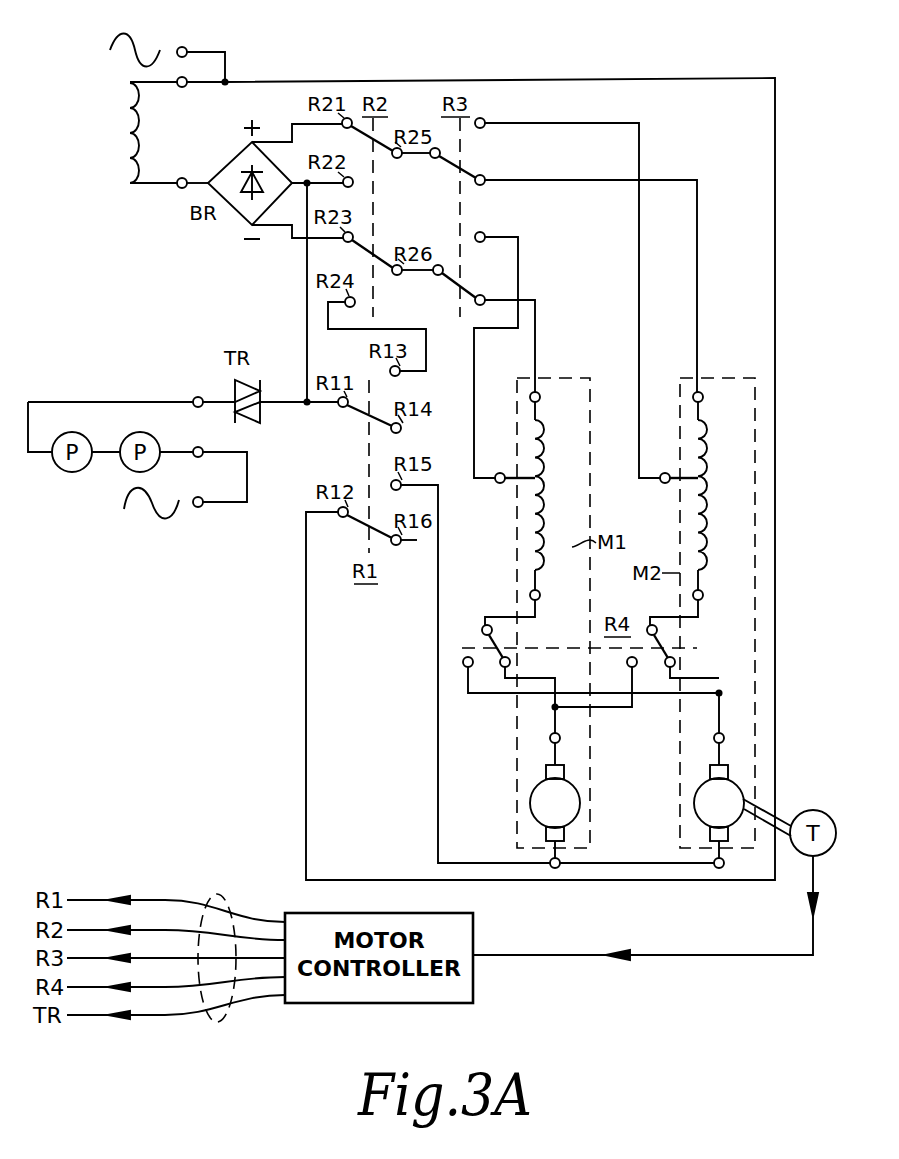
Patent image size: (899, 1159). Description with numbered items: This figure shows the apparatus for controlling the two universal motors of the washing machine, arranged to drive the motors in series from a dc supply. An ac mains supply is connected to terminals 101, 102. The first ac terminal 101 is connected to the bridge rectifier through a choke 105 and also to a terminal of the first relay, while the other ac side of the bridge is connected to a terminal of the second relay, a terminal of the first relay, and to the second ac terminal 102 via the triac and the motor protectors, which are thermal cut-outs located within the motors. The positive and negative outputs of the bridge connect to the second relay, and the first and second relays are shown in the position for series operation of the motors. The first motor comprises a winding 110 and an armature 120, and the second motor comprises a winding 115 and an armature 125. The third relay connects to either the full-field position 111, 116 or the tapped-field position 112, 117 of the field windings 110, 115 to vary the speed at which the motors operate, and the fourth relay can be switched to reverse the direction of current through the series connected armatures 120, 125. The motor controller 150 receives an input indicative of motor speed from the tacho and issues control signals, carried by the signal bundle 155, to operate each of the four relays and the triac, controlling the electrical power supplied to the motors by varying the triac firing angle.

The ac terminal 101 is at (186, 47).
The ac terminal 102 is at (199, 508).
The choke 105 is at (129, 131).
The winding 110 is at (552, 553).
The full-field position 111 is at (540, 397).
The tapped-field position 112 is at (498, 473).
The winding 115 is at (715, 553).
The full-field position 116 is at (703, 397).
The tapped-field position 117 is at (664, 484).
The armature 120 is at (541, 815).
The armature 125 is at (705, 815).
The motor controller 150 is at (473, 997).
The control signal bundle 155 is at (217, 894).